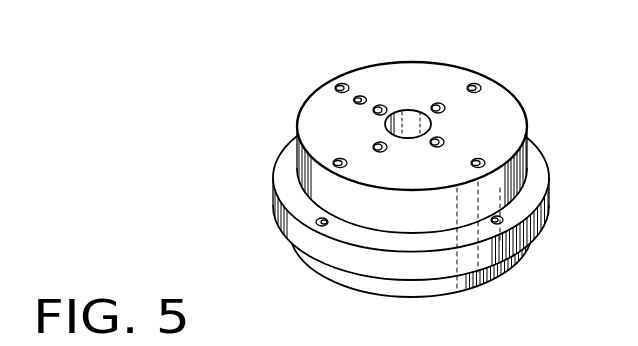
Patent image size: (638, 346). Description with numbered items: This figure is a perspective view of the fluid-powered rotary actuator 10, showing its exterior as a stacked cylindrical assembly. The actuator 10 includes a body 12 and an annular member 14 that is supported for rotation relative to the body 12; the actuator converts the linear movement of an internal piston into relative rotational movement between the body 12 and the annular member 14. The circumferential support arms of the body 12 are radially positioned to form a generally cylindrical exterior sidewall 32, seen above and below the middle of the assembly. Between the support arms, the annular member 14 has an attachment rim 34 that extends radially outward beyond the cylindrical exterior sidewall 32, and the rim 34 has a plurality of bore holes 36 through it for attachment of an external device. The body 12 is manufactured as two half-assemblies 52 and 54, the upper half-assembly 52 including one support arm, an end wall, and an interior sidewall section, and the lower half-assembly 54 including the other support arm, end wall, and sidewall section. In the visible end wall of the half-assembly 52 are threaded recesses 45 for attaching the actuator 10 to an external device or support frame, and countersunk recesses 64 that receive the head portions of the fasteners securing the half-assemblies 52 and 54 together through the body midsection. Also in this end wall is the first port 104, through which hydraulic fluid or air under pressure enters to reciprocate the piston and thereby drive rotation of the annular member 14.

The fluid-powered rotary actuator 10 is at (208, 163).
The body 12 is at (320, 95).
The annular member 14 is at (547, 203).
The cylindrical exterior sidewall 32 is at (312, 178).
The attachment rim 34 is at (344, 236).
The bore holes 36 is at (317, 222).
The threaded recesses 45 is at (340, 84).
The body half-assembly 52 is at (513, 108).
The body half-assembly 54 is at (455, 290).
The countersunk recess 64 is at (433, 105).
The first port 104 is at (366, 96).